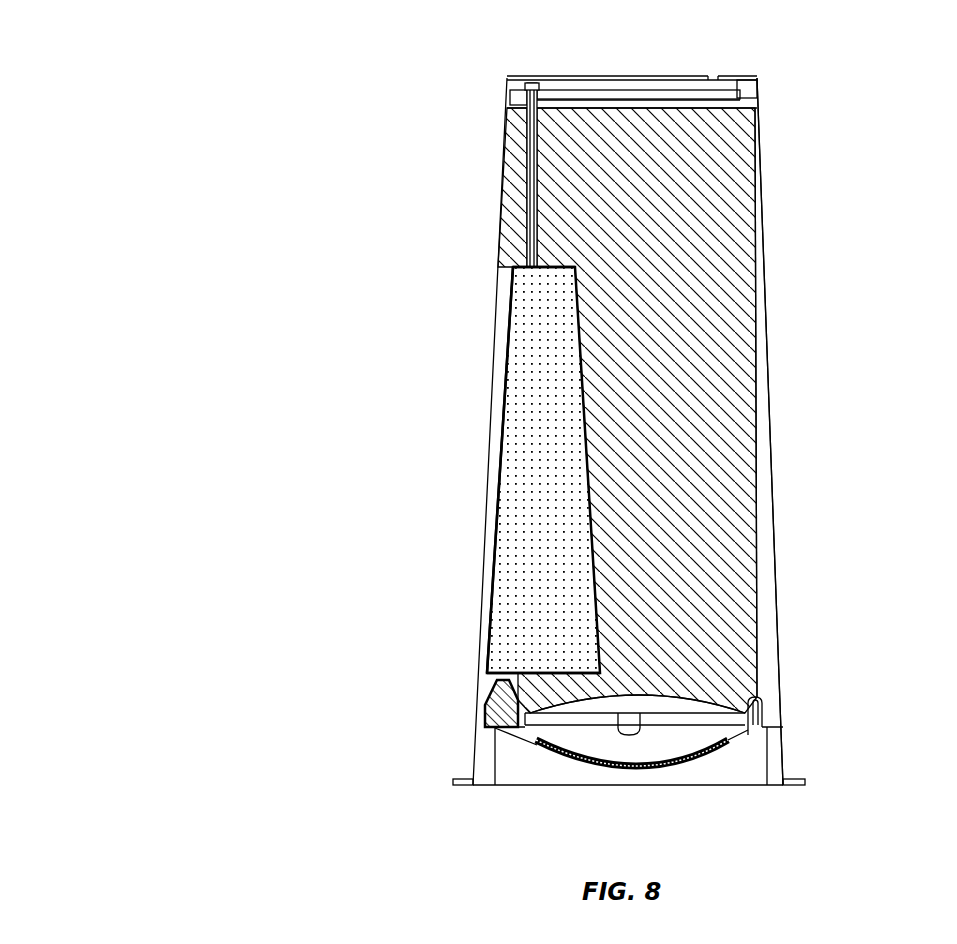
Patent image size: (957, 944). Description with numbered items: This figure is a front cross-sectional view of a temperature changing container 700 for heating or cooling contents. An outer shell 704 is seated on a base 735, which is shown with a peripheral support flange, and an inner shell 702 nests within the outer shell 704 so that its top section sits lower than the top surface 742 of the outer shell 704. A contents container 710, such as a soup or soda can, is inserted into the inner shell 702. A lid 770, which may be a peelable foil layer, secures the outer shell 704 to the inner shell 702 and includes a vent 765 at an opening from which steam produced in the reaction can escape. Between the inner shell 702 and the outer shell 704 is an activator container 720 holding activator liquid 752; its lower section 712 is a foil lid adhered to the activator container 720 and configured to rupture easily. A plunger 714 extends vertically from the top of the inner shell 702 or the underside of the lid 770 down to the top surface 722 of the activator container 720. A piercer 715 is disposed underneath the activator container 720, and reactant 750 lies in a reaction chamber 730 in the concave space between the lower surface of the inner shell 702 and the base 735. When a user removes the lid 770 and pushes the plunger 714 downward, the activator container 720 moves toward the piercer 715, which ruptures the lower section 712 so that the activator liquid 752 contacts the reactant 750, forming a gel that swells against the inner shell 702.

The temperature changing container 700 is at (300, 185).
The inner shell 702 is at (755, 520).
The outer shell 704 is at (785, 601).
The contents container 710 is at (680, 256).
The lower section of activator container 712 is at (487, 672).
The plunger 714 is at (530, 202).
The piercer 715 is at (485, 708).
The activator container 720 is at (505, 421).
The top surface of activator container 722 is at (532, 267).
The reaction chamber 730 is at (665, 700).
The base 735 is at (470, 790).
The top surface of outer shell 742 is at (507, 76).
The reactant 750 is at (652, 767).
The activator liquid 752 is at (518, 531).
The vent 765 is at (712, 73).
The lid 770 is at (603, 75).